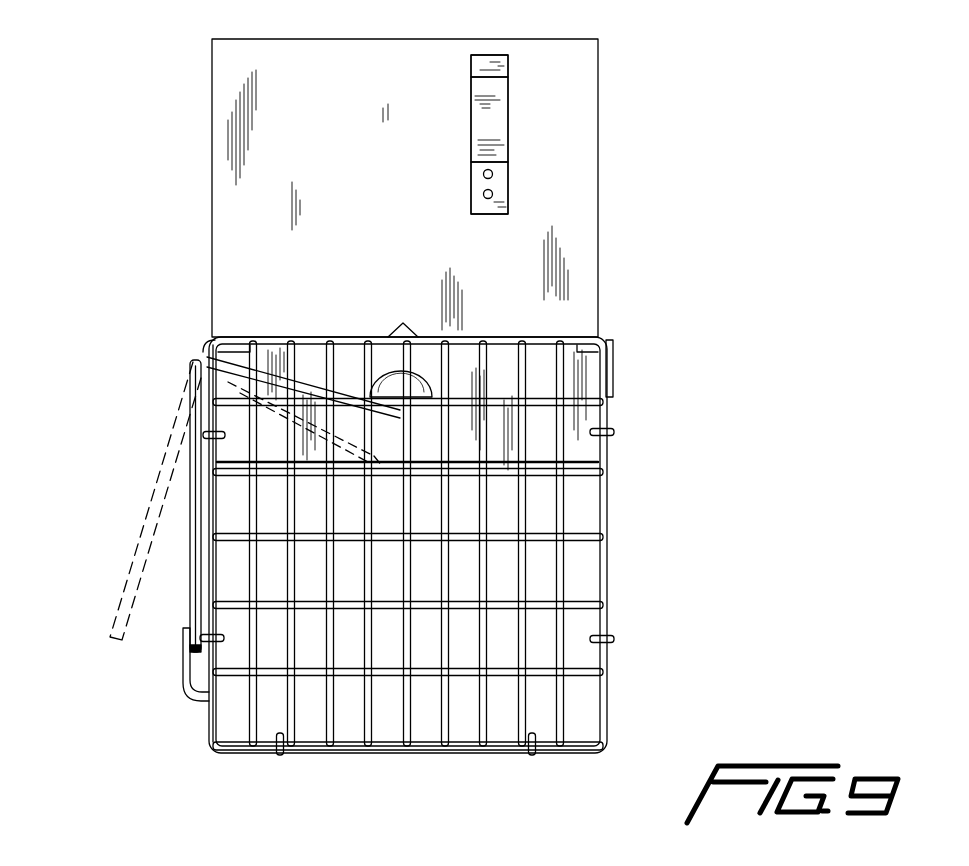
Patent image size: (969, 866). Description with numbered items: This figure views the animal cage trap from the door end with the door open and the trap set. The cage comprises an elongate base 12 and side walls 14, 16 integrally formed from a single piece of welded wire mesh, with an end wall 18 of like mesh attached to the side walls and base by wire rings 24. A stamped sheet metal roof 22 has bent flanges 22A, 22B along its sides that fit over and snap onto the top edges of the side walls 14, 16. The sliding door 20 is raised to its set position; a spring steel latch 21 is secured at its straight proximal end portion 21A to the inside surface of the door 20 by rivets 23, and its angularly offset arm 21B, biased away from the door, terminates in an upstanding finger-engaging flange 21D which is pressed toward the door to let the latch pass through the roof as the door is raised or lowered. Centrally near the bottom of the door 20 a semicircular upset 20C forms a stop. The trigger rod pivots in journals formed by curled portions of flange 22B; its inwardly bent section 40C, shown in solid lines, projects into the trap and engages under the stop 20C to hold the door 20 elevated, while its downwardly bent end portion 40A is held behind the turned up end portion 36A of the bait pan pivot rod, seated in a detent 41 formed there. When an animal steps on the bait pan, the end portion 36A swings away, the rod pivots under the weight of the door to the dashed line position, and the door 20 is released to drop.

The base 12 is at (459, 760).
The side wall 14 is at (609, 581).
The side wall 16 is at (203, 545).
The end wall 18 is at (568, 509).
The sliding door 20 is at (578, 206).
The semicircular upset 20C is at (379, 365).
The spring steel latch 21 is at (464, 137).
The proximal end portion 21A is at (470, 197).
The angularly offset arm 21B is at (470, 119).
The finger-engaging flange 21D is at (470, 64).
The roof 22 is at (507, 334).
The flange 22A is at (615, 349).
The flange 22B is at (205, 340).
The rivets 23 is at (492, 192).
The wire rings 24 is at (614, 432).
The turned up end portion 36A is at (183, 693).
The downwardly bent end portion 40A is at (152, 467).
The inwardly bent section 40C is at (274, 349).
The detent 41 is at (186, 639).